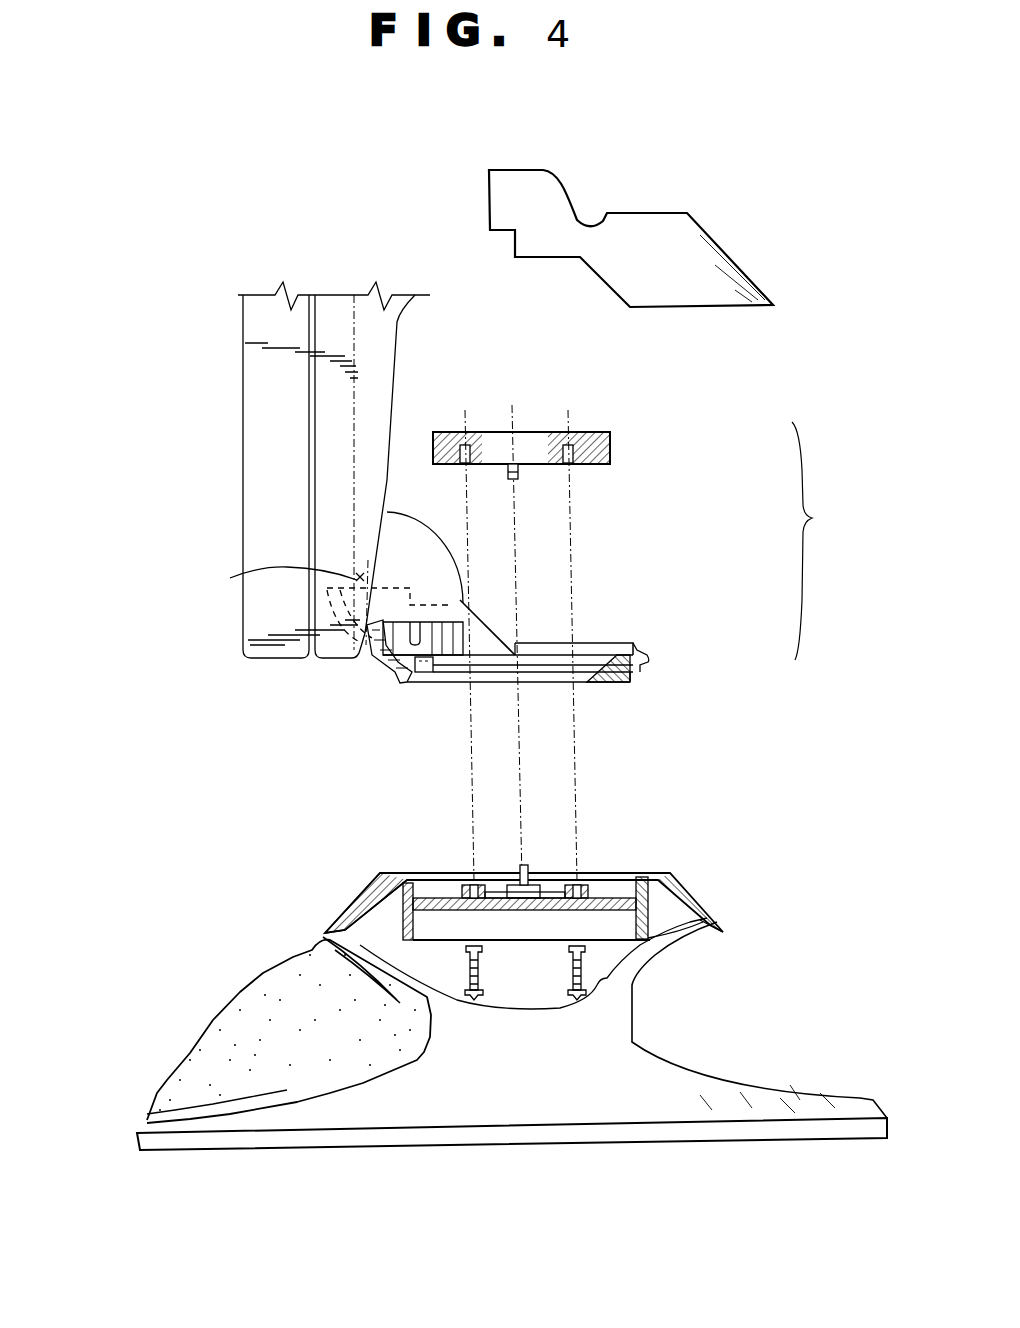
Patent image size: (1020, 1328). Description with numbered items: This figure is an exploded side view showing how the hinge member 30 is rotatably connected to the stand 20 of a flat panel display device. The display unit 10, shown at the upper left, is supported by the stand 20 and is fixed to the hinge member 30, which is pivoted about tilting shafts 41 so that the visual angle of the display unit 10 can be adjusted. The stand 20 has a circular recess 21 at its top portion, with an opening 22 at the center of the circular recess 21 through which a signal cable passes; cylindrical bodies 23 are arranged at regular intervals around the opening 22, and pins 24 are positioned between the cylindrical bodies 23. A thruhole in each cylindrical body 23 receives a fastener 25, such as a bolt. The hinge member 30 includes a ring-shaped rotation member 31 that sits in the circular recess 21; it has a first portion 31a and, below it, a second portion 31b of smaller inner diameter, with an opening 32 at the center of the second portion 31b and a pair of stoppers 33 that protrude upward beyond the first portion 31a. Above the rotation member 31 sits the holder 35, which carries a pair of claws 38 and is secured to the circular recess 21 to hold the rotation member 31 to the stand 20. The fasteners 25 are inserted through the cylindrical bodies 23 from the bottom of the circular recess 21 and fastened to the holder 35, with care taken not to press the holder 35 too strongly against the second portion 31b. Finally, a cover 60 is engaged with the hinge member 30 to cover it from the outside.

The display unit 10 is at (238, 470).
The stand 20 is at (235, 1008).
The circular recess 21 is at (633, 873).
The opening 22 is at (493, 878).
The cylindrical bodies 23 is at (477, 878).
The pins 24 is at (527, 873).
The fastener 25 is at (637, 980).
The hinge member 30 is at (823, 541).
The rotation member 31 is at (643, 660).
The first portion 31a is at (632, 680).
The second portion 31b is at (607, 648).
The opening 32 is at (582, 655).
The stoppers 33 is at (430, 690).
The holder 35 is at (612, 448).
The claws 38 is at (518, 478).
The tilting shafts 41 is at (356, 577).
The cover 60 is at (697, 222).